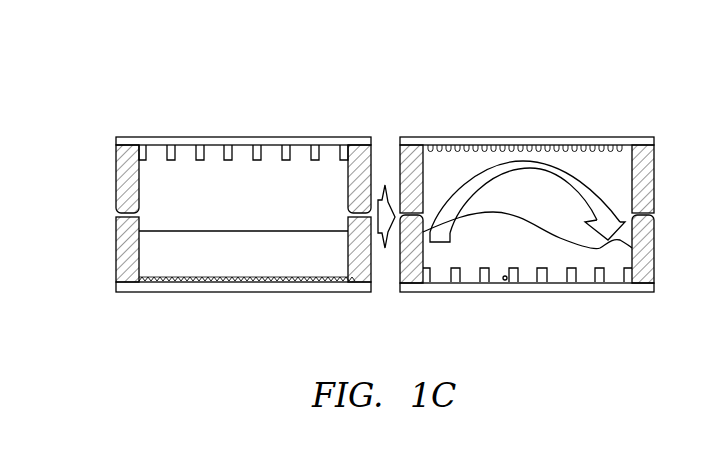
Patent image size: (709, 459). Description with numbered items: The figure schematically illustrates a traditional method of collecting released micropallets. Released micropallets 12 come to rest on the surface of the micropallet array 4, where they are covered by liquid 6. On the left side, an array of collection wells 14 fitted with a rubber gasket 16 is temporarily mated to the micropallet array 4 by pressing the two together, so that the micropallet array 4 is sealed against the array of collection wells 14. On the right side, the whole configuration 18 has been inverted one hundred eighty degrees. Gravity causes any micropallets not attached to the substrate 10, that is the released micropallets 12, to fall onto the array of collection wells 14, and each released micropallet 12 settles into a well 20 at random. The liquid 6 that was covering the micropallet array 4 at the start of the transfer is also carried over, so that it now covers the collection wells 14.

The micropallet array 4 is at (190, 282).
The liquid 6 is at (236, 248).
The substrate 10 is at (593, 137).
The released micropallet 12 is at (503, 280).
The array of collection wells 14 is at (210, 153).
The rubber gasket 16 is at (116, 182).
The configuration 18 is at (533, 92).
The well 20 is at (493, 275).